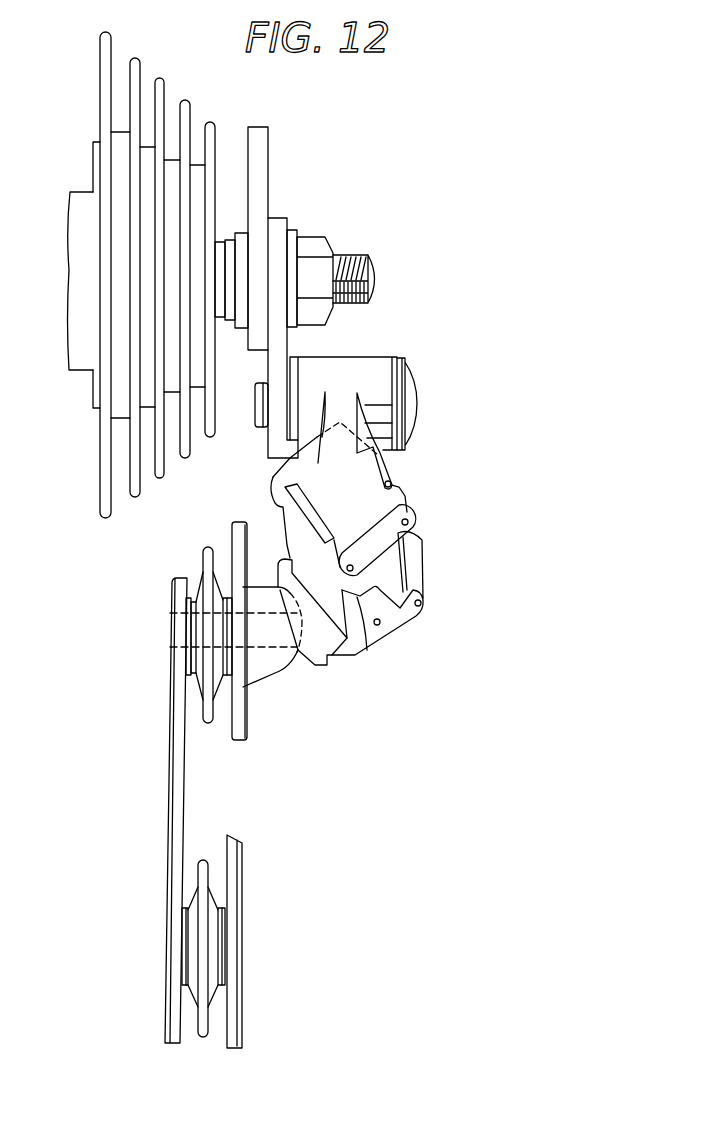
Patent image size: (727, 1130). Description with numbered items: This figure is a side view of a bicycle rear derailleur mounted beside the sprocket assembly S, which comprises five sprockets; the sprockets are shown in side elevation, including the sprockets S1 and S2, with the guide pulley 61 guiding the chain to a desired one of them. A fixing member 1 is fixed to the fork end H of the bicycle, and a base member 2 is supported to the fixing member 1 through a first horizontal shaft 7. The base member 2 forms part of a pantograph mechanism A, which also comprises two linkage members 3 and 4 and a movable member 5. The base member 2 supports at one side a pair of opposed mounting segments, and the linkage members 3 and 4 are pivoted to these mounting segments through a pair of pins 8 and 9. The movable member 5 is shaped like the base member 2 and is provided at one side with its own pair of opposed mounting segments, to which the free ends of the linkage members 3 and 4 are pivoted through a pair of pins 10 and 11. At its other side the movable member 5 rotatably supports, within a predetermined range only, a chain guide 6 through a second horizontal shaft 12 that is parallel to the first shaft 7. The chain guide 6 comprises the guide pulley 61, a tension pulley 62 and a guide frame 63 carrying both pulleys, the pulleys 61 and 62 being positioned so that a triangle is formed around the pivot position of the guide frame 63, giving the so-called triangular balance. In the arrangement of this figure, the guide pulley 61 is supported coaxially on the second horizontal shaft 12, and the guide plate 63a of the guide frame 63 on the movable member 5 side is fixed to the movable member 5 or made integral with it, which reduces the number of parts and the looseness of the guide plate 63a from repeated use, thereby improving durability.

The fork end H is at (263, 170).
The sprocket assembly S is at (144, 280).
The smallest sprocket S1 is at (207, 412).
The largest sprocket S2 is at (95, 495).
The fixing member 1 is at (282, 348).
The base member 2 is at (397, 358).
The linkage member 3 is at (397, 482).
The linkage member 4 is at (273, 503).
The movable member 5 is at (303, 655).
The chain guide 6 is at (202, 785).
The first horizontal shaft 7 is at (415, 410).
The pin 8 is at (415, 522).
The pin 9 is at (353, 570).
The pin 10 is at (423, 610).
The pin 11 is at (380, 630).
The second horizontal shaft 12 is at (268, 648).
The guide pulley 61 is at (195, 680).
The tension pulley 62 is at (193, 945).
The guide frame 63 is at (170, 768).
The guide plate 63a is at (240, 733).
The pantograph mechanism A is at (397, 465).